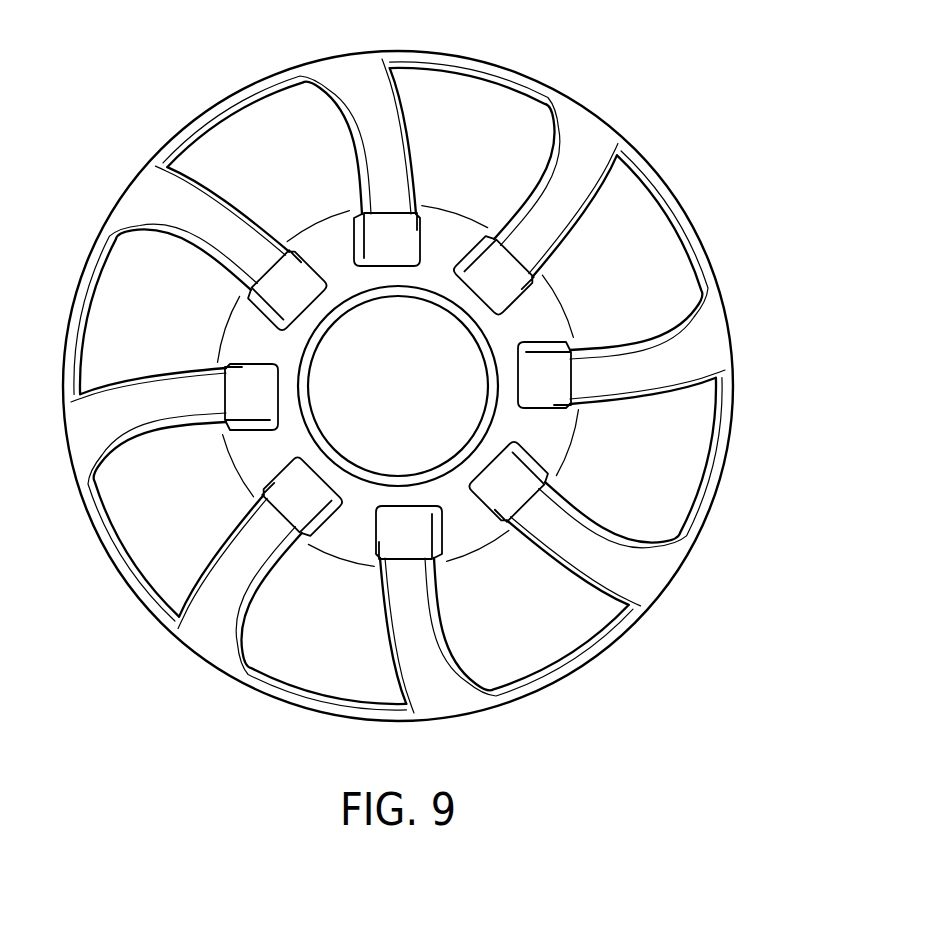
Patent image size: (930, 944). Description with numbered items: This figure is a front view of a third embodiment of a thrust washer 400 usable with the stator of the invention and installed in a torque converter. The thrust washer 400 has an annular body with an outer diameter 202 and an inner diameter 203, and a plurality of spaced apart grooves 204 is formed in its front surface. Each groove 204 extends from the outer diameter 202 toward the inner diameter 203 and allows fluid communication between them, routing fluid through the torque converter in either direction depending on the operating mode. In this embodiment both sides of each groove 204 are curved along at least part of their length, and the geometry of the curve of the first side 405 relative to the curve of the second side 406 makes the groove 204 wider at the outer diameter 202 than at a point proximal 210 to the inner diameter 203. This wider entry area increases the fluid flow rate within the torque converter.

The thrust washer 400 is at (407, 386).
The outer diameter 202 is at (432, 386).
The inner diameter 203 is at (456, 386).
The groove 204 is at (398, 386).
The point proximal to the inner diameter 210 is at (376, 386).
The first side 405 is at (398, 386).
The second side 406 is at (398, 386).